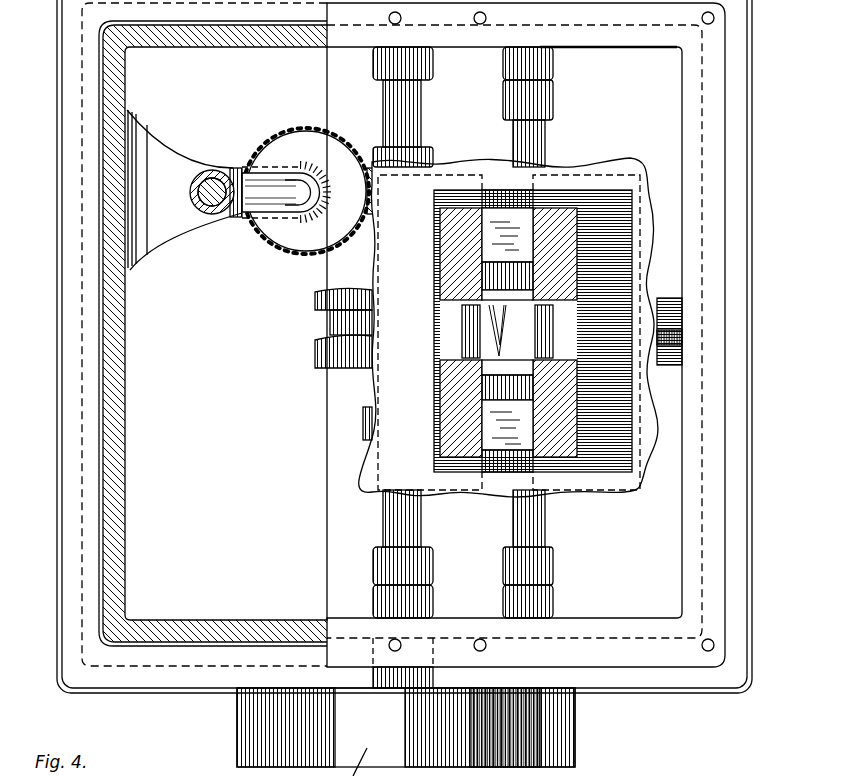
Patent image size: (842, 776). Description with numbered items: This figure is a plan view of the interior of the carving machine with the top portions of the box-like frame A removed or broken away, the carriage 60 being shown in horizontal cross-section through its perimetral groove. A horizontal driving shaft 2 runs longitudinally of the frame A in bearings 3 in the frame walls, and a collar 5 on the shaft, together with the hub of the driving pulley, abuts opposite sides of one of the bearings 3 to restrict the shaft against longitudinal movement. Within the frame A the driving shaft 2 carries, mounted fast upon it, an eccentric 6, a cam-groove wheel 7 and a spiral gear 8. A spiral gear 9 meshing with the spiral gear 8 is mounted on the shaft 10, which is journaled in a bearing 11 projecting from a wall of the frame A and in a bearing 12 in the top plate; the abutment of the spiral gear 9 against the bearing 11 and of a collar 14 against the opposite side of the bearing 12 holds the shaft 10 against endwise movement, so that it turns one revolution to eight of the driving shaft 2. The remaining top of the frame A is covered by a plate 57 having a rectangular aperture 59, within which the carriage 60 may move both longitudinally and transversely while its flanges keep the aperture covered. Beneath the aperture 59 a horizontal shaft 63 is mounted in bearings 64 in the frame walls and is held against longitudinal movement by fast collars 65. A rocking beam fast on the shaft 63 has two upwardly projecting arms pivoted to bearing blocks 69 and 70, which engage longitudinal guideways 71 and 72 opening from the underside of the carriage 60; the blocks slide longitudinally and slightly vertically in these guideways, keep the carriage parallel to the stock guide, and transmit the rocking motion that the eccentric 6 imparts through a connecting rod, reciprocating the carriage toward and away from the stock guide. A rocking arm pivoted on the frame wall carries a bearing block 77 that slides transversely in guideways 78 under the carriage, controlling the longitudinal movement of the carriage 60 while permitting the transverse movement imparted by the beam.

The frame A is at (103, 490).
The driving shaft 2 is at (397, 108).
The bearings 3 is at (392, 65).
The collar 5 is at (398, 562).
The eccentric 6 is at (365, 407).
The cam-groove wheel 7 is at (315, 350).
The spiral gear 8 is at (372, 164).
The spiral gear 9 is at (306, 191).
The shaft 10 is at (262, 190).
The bearing 11 is at (184, 190).
The bearing 12 is at (206, 172).
The collar 14 is at (236, 218).
The plate 57 is at (555, 171).
The rectangular aperture 59 is at (615, 463).
The carriage 60 is at (637, 174).
The horizontal shaft 63 is at (522, 523).
The bearings 64 is at (548, 70).
The fast collars 65 is at (522, 97).
The bearing block 69 is at (507, 473).
The bearing block 70 is at (507, 320).
The longitudinal guideway 71 is at (481, 378).
The longitudinal guideway 72 is at (481, 286).
The bearing block 77 is at (508, 330).
The guideways 78 is at (440, 332).